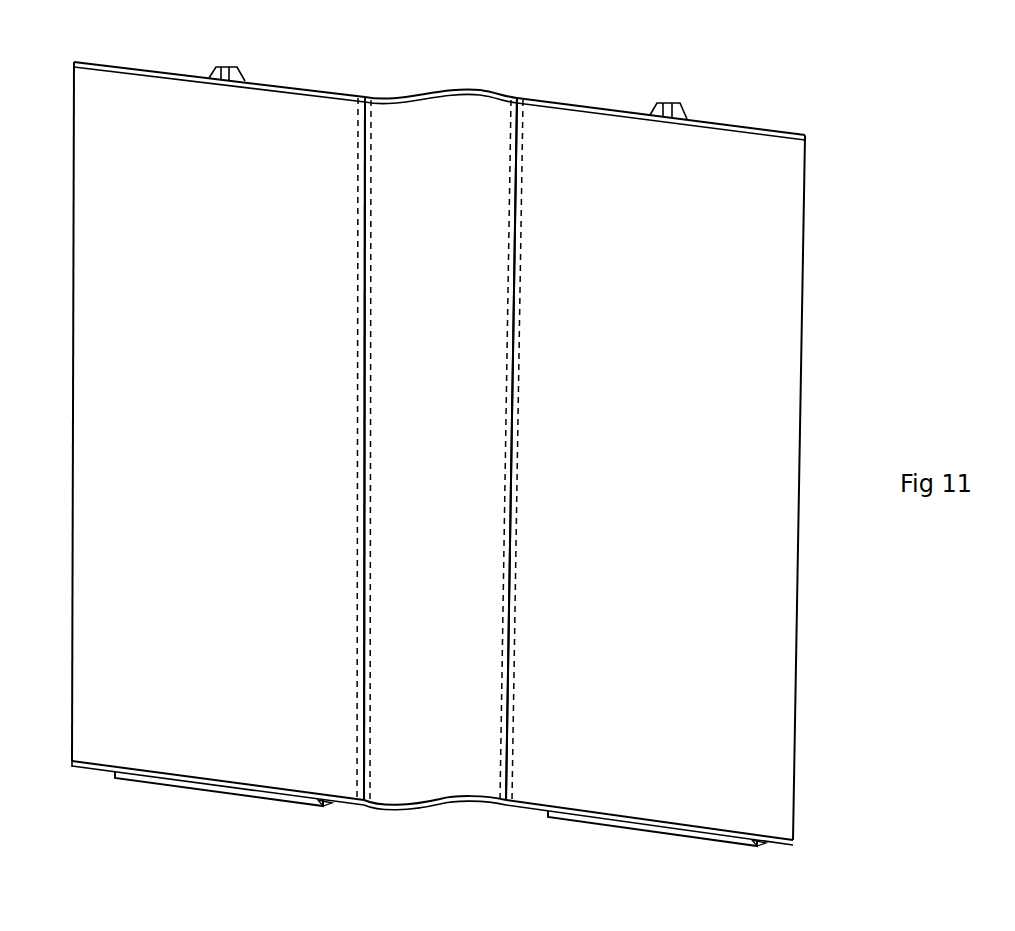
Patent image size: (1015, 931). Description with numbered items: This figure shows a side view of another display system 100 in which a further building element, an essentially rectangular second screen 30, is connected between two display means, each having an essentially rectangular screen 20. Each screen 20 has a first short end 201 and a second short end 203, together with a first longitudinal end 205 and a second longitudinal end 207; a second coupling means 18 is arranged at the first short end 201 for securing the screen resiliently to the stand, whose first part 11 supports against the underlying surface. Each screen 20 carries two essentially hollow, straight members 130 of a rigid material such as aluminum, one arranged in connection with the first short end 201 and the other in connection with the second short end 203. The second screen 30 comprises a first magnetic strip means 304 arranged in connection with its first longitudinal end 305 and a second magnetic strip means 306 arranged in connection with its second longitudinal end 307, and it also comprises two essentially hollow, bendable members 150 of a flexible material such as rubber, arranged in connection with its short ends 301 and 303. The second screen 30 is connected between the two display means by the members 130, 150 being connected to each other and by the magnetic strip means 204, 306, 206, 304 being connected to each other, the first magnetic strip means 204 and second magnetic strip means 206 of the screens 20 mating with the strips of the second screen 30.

The display system 100 is at (438, 451).
The first part 11 is at (325, 805).
The second coupling means 18 is at (245, 72).
The screen 20 is at (438, 459).
The second screen 30 is at (424, 475).
The straight member 130 is at (317, 90).
The bendable member 150 is at (440, 101).
The first short end 201 is at (262, 93).
The second short end 203 is at (218, 778).
The first magnetic strip means 204 is at (518, 432).
The first longitudinal end 205 is at (75, 481).
The second magnetic strip means 206 is at (358, 442).
The second longitudinal end 207 is at (360, 485).
The short end 301 is at (395, 106).
The short end 303 is at (399, 796).
The first magnetic strip means 304 is at (372, 445).
The first longitudinal end 305 is at (364, 516).
The second magnetic strip means 306 is at (505, 463).
The second longitudinal end 307 is at (510, 366).